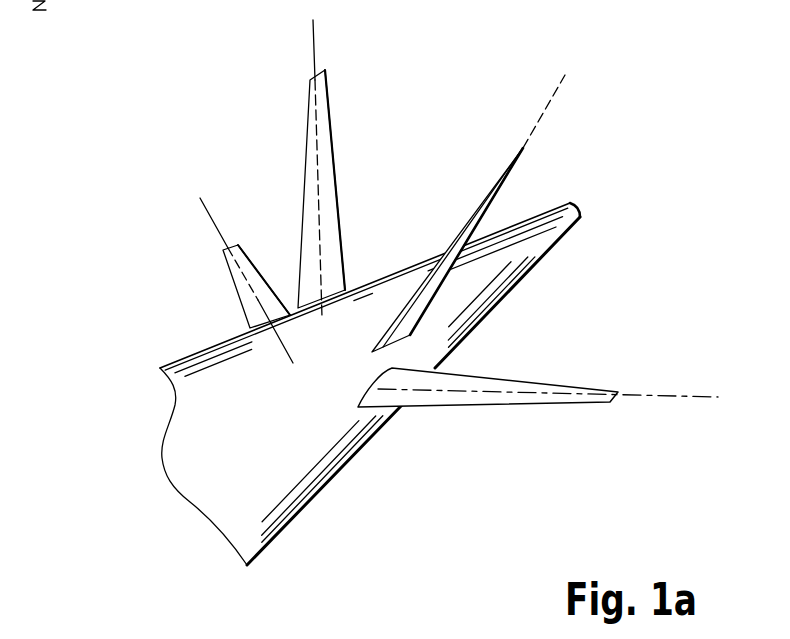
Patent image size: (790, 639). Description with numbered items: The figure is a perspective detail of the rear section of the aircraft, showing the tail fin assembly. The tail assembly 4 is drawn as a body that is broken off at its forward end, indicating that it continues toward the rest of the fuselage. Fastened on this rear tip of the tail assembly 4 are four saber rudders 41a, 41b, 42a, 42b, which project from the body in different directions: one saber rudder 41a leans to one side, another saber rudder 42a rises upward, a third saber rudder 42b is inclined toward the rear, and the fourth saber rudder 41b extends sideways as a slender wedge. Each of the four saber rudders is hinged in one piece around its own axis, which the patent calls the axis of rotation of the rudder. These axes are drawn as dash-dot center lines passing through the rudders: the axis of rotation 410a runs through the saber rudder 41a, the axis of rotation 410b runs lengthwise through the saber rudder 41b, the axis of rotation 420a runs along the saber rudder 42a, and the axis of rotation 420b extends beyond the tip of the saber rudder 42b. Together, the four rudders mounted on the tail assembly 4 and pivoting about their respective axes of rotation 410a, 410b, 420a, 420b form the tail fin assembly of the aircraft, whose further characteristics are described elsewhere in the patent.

The tail assembly 4 is at (415, 437).
The saber rudder 41a is at (240, 296).
The saber rudder 41b is at (542, 382).
The saber rudder 42a is at (337, 170).
The saber rudder 42b is at (493, 207).
The axis of rotation 410a is at (212, 220).
The axis of rotation 410b is at (667, 398).
The axis of rotation 420a is at (313, 40).
The axis of rotation 420b is at (550, 102).